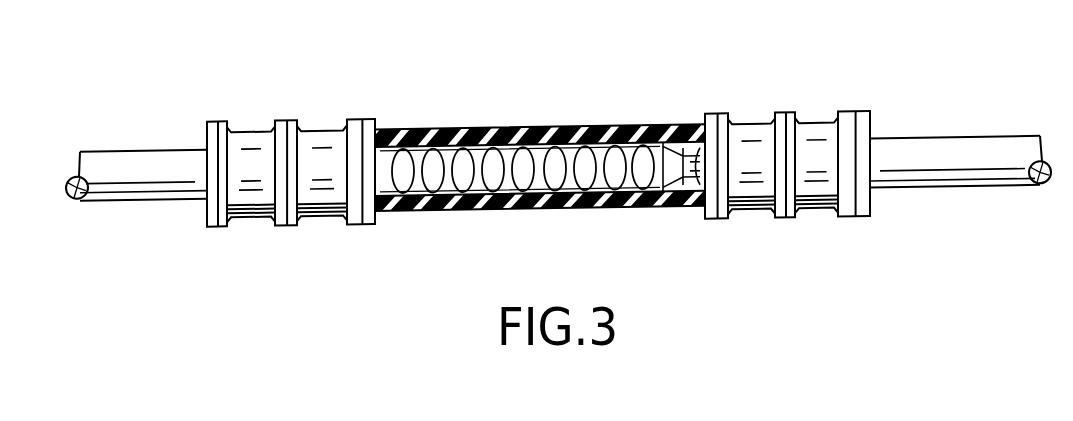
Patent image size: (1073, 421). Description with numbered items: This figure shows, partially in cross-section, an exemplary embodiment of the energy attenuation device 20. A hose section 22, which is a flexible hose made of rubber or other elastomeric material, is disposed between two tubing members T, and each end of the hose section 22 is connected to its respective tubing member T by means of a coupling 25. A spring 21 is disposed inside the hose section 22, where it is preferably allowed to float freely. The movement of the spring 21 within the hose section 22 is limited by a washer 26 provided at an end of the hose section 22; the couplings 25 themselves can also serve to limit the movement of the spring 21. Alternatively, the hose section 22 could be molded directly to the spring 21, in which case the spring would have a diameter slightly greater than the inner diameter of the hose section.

The energy attenuation device 20 is at (467, 118).
The spring 21 is at (628, 148).
The hose section 22 is at (553, 129).
The coupling 25 is at (322, 131).
The washer 26 is at (669, 196).
The tubing member T is at (132, 148).